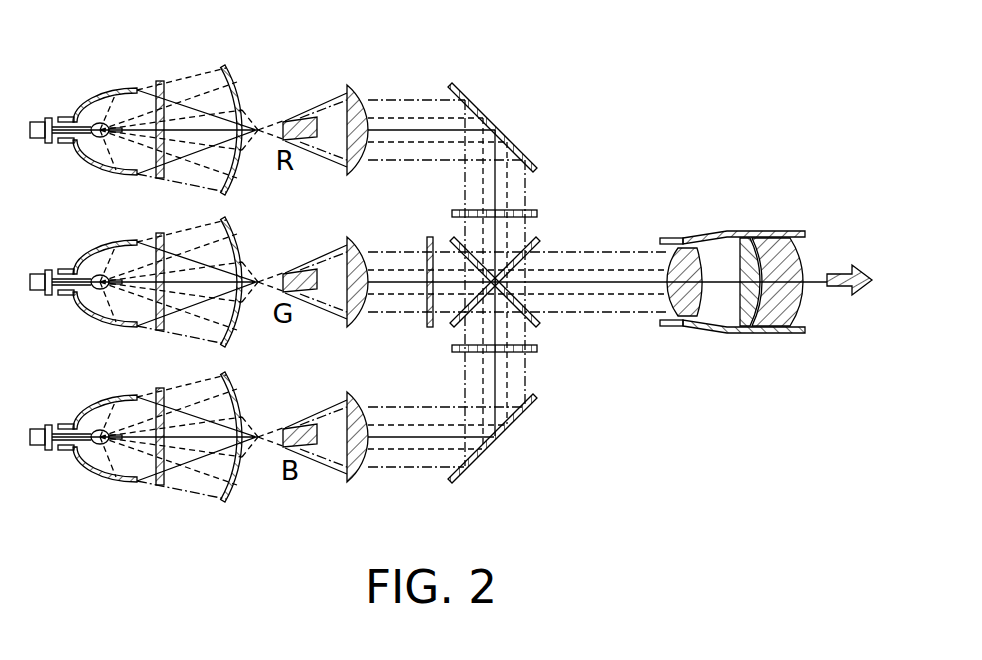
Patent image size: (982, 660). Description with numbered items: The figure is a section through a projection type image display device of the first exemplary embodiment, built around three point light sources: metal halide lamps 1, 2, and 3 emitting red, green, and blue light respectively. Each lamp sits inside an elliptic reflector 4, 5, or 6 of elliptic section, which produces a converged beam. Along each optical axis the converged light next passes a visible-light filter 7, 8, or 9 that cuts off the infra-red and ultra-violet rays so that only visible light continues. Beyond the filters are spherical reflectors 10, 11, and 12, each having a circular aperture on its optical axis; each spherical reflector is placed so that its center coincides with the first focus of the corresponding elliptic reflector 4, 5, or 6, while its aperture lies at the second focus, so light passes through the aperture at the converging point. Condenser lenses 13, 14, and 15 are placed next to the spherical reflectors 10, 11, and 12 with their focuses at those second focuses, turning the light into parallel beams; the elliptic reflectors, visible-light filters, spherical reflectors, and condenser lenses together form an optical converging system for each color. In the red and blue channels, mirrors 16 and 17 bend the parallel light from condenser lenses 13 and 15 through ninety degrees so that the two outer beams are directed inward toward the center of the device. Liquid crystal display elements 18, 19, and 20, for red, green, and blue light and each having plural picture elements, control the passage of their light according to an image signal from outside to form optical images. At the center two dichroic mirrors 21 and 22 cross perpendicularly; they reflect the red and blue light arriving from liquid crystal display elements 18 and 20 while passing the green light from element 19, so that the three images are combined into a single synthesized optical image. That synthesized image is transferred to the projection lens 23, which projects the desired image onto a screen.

The metal halide lamp 1 is at (97, 124).
The metal halide lamp 2 is at (85, 313).
The metal halide lamp 3 is at (98, 472).
The elliptic reflector 4 is at (112, 90).
The elliptic reflector 5 is at (108, 321).
The elliptic reflector 6 is at (125, 483).
The visible-light filter 7 is at (160, 80).
The visible-light filter 8 is at (166, 331).
The visible-light filter 9 is at (163, 487).
The spherical reflector 10 is at (228, 65).
The spherical reflector 11 is at (236, 340).
The spherical reflector 12 is at (231, 500).
The condenser lens 13 is at (350, 86).
The condenser lens 14 is at (342, 233).
The condenser lens 15 is at (357, 479).
The mirror 16 is at (468, 90).
The mirror 17 is at (486, 458).
The liquid crystal display element 18 is at (491, 208).
The liquid crystal display element 19 is at (424, 233).
The liquid crystal display element 20 is at (538, 352).
The dichroic mirror 21 is at (495, 240).
The dichroic mirror 22 is at (536, 243).
The projection lens 23 is at (706, 233).